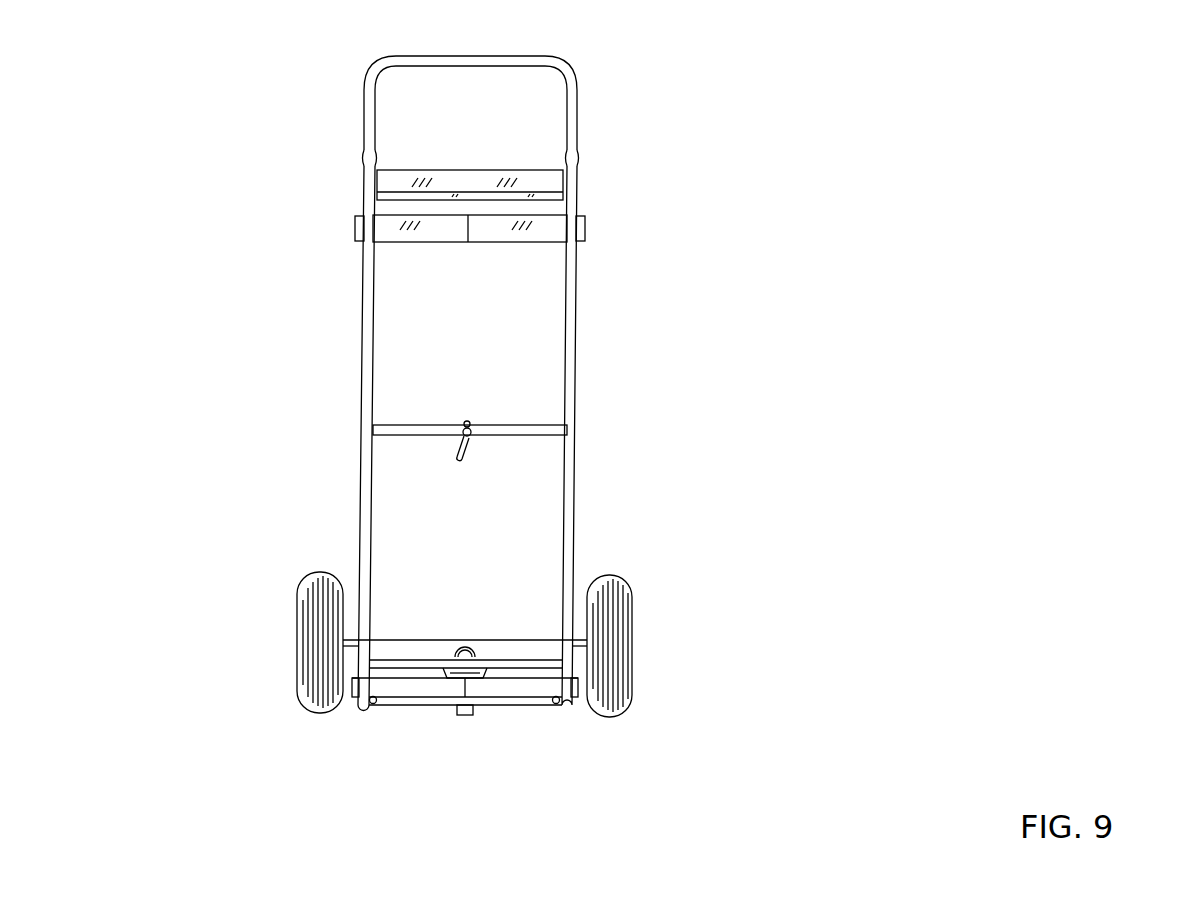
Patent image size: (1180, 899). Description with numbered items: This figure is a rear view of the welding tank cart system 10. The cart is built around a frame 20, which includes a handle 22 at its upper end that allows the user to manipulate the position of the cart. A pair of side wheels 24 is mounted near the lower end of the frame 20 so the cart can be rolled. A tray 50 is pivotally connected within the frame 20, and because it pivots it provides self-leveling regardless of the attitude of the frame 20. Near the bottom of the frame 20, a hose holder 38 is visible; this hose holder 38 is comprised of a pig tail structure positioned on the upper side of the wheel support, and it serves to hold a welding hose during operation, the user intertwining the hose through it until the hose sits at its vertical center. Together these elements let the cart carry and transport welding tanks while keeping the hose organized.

The welding tank cart system 10 is at (793, 183).
The frame 20 is at (574, 335).
The handle 22 is at (477, 56).
The side wheels 24 is at (633, 648).
The hose holder 38 is at (455, 646).
The tray 50 is at (428, 172).